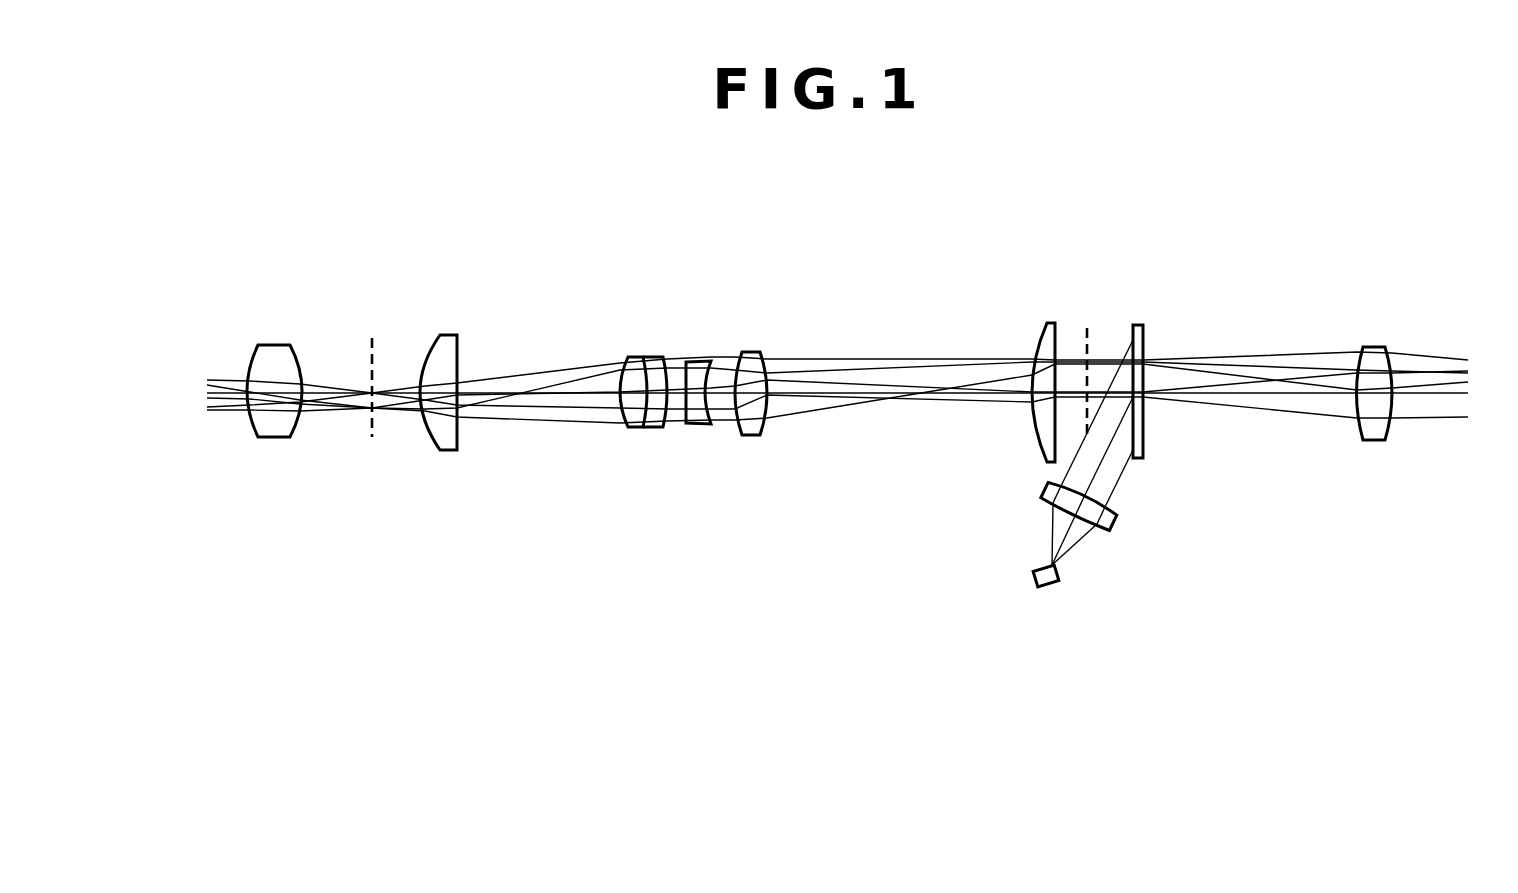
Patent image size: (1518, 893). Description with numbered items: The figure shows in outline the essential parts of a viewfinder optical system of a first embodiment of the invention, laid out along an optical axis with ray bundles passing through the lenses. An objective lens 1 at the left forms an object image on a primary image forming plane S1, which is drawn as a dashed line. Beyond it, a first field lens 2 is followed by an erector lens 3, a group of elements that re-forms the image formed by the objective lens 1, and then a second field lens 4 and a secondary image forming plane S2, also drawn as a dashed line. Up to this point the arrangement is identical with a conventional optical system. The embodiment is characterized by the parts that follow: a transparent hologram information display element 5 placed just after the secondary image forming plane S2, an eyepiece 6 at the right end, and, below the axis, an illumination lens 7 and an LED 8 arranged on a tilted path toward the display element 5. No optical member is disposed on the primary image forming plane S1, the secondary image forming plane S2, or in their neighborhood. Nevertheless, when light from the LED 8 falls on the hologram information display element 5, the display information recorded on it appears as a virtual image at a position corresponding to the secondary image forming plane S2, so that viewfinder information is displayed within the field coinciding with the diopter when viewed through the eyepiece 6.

The objective lens 1 is at (277, 344).
The primary image forming plane S1 is at (372, 337).
The first field lens 2 is at (449, 334).
The erector lens 3 is at (605, 338).
The second field lens 4 is at (1047, 323).
The secondary image forming plane S2 is at (1087, 329).
The transparent hologram information display element 5 is at (1140, 324).
The eyepiece 6 is at (1373, 346).
The illumination lens 7 is at (1118, 517).
The LED 8 is at (1059, 580).